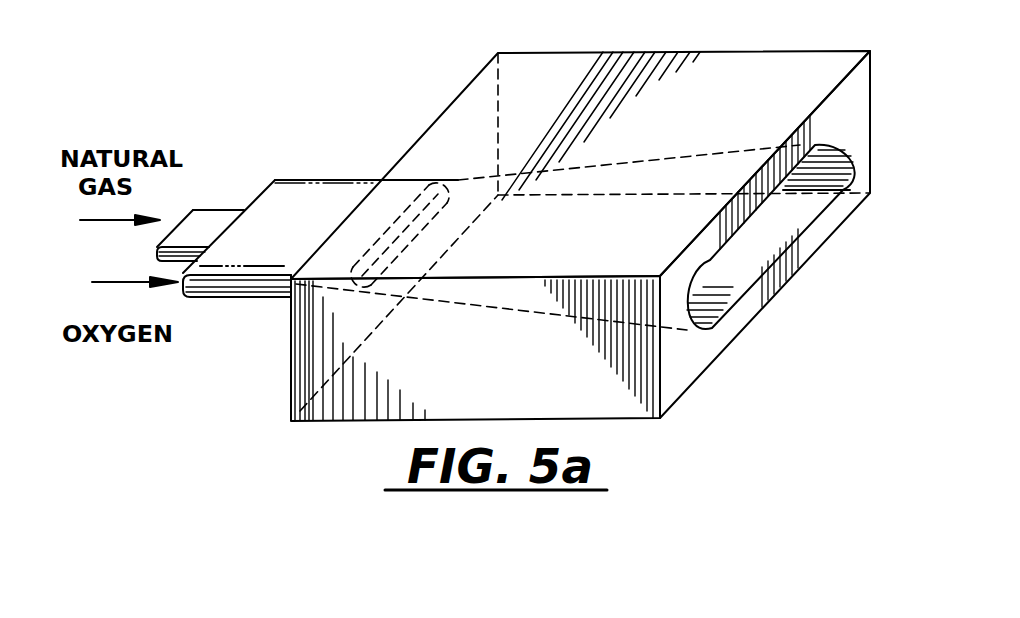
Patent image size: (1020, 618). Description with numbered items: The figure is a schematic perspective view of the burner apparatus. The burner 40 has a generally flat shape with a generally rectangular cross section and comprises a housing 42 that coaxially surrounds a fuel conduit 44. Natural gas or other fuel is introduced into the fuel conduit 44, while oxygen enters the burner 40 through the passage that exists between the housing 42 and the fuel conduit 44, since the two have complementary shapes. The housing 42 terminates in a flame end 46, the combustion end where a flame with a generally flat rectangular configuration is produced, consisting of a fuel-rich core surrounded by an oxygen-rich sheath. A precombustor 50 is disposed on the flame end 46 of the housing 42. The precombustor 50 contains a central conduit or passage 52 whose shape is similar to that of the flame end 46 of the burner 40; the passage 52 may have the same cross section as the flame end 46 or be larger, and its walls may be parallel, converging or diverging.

The burner 40 is at (307, 203).
The housing 42 is at (303, 243).
The fuel conduit 44 is at (232, 210).
The flame end 46 is at (448, 193).
The precombustor 50 is at (718, 44).
The passage 52 is at (794, 242).